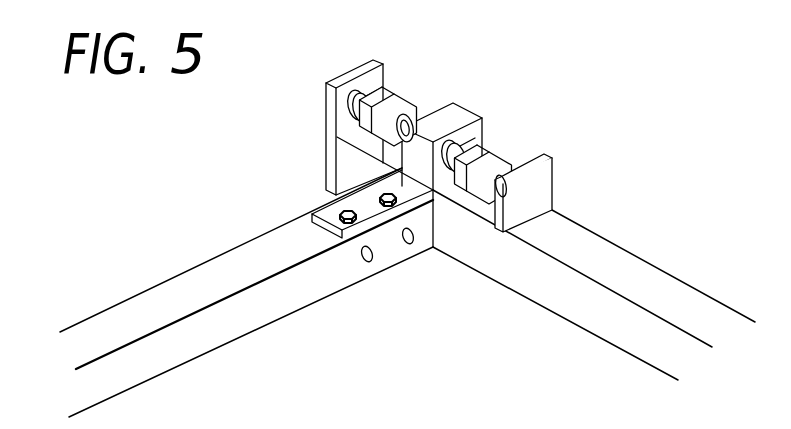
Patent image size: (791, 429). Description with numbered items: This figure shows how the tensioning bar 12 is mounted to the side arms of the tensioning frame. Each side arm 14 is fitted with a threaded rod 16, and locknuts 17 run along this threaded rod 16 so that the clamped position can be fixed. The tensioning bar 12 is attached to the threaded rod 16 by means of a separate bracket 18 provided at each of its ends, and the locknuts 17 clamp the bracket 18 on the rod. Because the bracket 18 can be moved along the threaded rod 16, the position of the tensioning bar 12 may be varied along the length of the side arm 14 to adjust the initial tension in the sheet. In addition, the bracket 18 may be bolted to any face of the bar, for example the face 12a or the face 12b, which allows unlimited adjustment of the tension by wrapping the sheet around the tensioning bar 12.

The tensioning bar 12 is at (235, 292).
The face of the bar 12a is at (279, 236).
The face of the bar 12b is at (313, 290).
The side arm 14 is at (612, 244).
The threaded rod 16 is at (475, 137).
The locknuts 17 is at (391, 96).
The bracket 18 is at (416, 193).